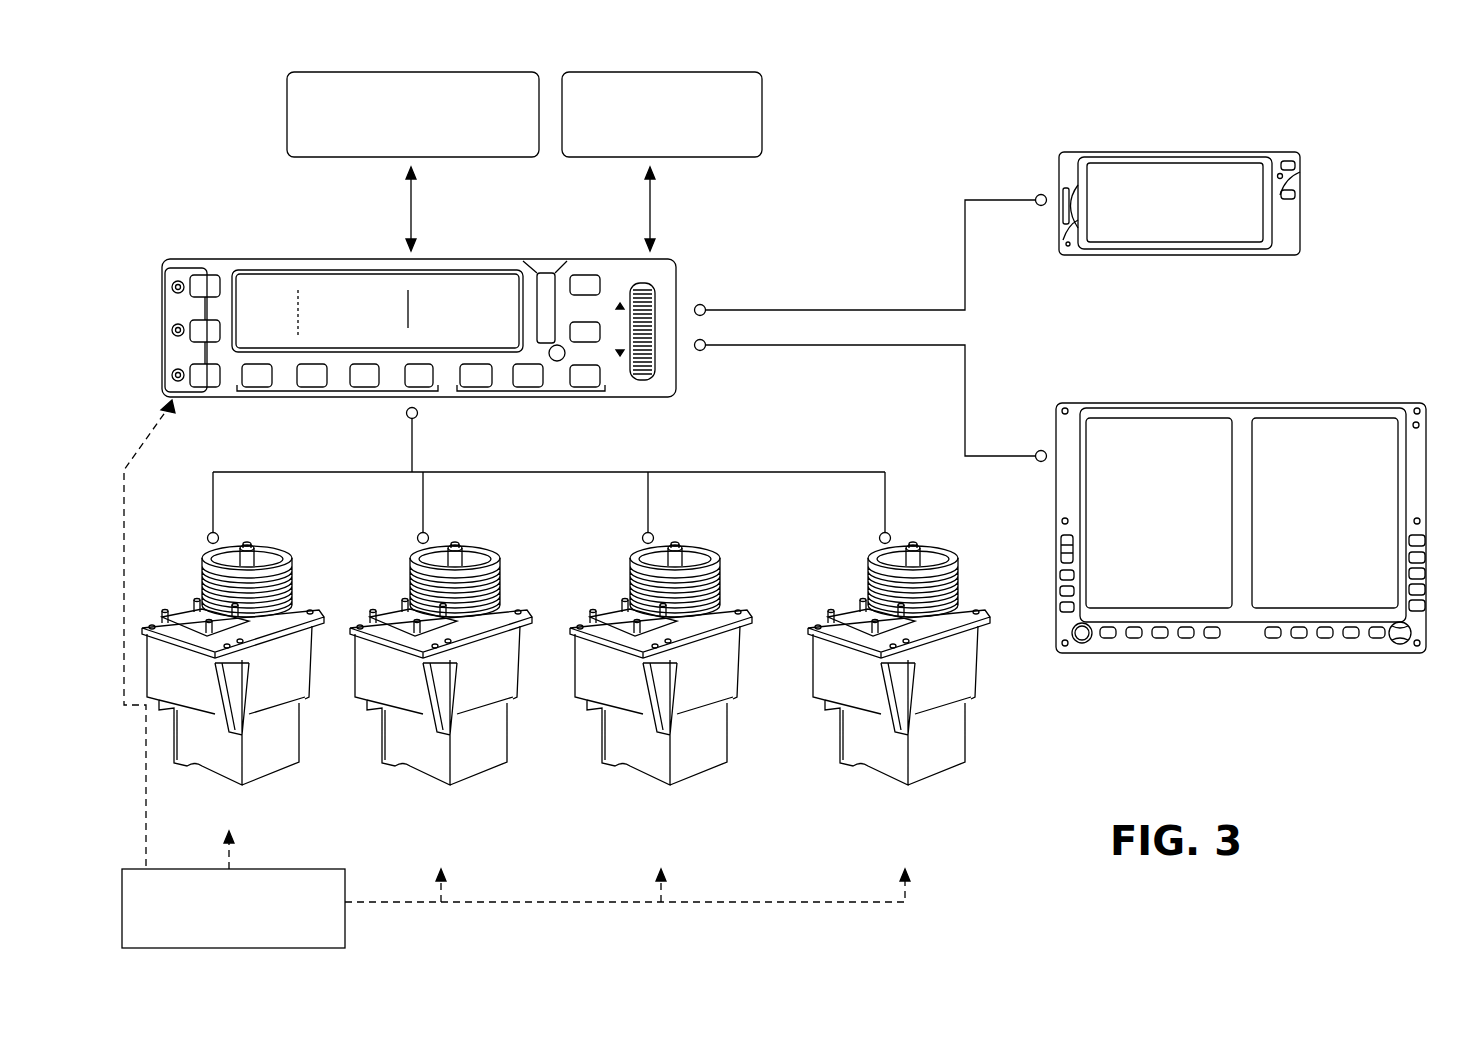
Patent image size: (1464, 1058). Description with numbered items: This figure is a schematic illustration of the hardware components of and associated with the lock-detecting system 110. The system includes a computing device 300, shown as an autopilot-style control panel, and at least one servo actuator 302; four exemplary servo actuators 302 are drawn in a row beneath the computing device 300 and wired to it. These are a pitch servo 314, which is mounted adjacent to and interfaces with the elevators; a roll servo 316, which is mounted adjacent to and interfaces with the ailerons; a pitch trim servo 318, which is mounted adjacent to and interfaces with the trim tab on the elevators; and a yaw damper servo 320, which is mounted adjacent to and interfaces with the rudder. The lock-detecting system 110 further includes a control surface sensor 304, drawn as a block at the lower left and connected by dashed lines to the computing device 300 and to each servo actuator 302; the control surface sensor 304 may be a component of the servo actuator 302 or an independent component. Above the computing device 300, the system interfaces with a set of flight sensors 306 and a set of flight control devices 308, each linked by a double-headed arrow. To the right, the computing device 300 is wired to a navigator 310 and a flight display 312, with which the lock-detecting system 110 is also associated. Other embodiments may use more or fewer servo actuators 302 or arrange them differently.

The lock-detecting system 110 is at (960, 108).
The computing device 300 is at (140, 255).
The servo actuator 302 is at (380, 552).
The control surface sensor 304 is at (347, 917).
The flight sensors 306 is at (478, 72).
The flight control devices 308 is at (721, 72).
The navigator 310 is at (1280, 152).
The flight display 312 is at (1378, 403).
The pitch servo 314 is at (290, 730).
The roll servo 316 is at (495, 725).
The pitch trim servo 318 is at (713, 746).
The yaw damper servo 320 is at (956, 746).